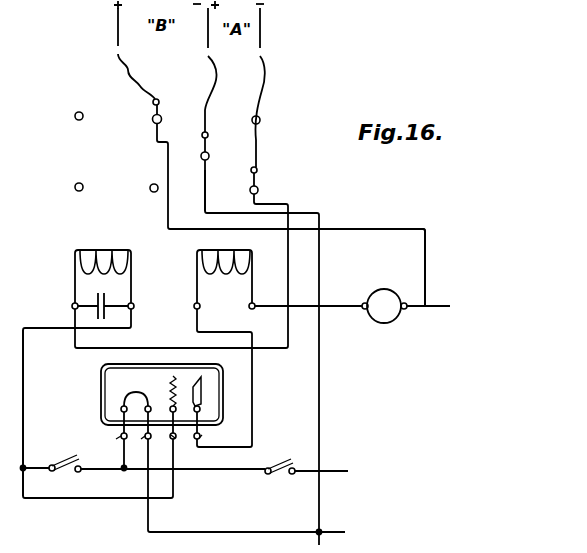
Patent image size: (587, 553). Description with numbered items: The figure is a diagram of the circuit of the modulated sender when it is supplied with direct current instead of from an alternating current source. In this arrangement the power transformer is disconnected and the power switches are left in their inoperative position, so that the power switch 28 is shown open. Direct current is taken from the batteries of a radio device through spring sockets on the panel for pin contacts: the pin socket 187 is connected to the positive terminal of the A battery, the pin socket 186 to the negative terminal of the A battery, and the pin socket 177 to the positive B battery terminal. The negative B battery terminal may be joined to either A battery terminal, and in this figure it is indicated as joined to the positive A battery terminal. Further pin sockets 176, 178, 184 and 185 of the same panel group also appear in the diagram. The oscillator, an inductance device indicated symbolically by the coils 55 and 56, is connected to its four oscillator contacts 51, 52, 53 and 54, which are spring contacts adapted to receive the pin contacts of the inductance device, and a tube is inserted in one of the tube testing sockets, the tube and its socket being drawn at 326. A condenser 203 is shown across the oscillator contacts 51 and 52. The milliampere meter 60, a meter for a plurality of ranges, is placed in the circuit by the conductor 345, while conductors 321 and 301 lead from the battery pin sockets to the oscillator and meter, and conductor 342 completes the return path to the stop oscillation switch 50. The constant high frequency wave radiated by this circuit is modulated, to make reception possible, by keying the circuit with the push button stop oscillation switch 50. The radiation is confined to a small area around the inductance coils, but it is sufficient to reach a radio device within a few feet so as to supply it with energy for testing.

The pin socket 176 is at (82, 104).
The pin socket 177 is at (153, 118).
The pin socket 178 is at (257, 115).
The pin socket 184 is at (79, 183).
The pin socket 185 is at (150, 187).
The pin socket 186 is at (258, 190).
The pin socket 187 is at (209, 156).
The conductor 321 is at (207, 190).
The conductor 301 is at (447, 250).
The coil 55 is at (93, 249).
The coil 56 is at (232, 249).
The condenser 203 is at (103, 298).
The oscillator contact 51 is at (72, 306).
The oscillator contact 52 is at (128, 308).
The oscillator contact 53 is at (194, 308).
The oscillator contact 54 is at (250, 308).
The conductor 345 is at (338, 300).
The milliampere meter 60 is at (398, 323).
The vacuum tube 326 is at (135, 349).
The conductor 342 is at (25, 407).
The stop oscillation switch 50 is at (65, 461).
The power switch 28 is at (290, 459).